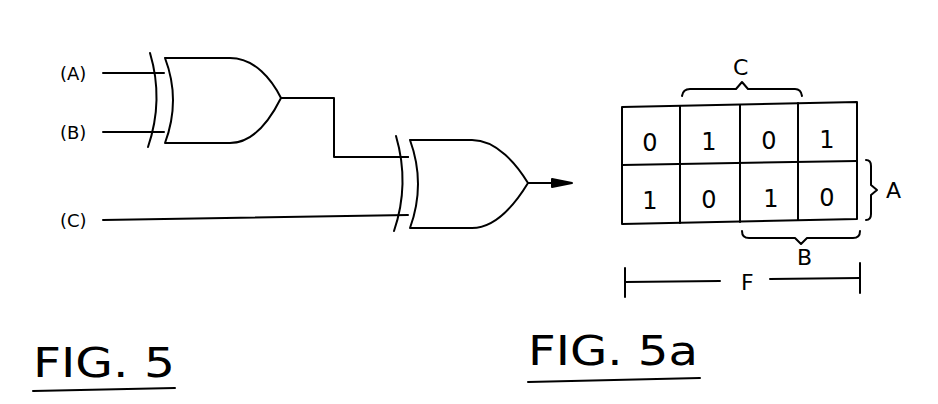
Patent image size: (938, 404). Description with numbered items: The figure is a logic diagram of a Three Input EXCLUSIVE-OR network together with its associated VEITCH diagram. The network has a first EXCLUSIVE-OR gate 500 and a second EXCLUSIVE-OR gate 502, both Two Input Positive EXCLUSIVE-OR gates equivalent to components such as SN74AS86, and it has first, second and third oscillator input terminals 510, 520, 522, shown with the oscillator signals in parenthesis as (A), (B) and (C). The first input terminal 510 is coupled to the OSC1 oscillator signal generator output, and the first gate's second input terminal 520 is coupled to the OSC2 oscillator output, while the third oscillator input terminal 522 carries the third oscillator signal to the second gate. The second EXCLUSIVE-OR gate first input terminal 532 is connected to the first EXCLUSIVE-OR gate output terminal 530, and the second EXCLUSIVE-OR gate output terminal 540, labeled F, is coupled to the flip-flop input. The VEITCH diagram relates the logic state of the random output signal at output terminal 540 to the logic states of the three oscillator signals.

The first EXCLUSIVE-OR gate 500 is at (235, 116).
The second EXCLUSIVE-OR gate 502 is at (482, 199).
The first oscillator input terminal 510 is at (118, 73).
The second oscillator input terminal 520 is at (120, 132).
The third oscillator input terminal 522 is at (343, 215).
The first EXCLUSIVE-OR gate output terminal 530 is at (283, 96).
The second EXCLUSIVE-OR gate first input terminal 532 is at (380, 155).
The second EXCLUSIVE-OR gate output terminal 540 is at (543, 177).